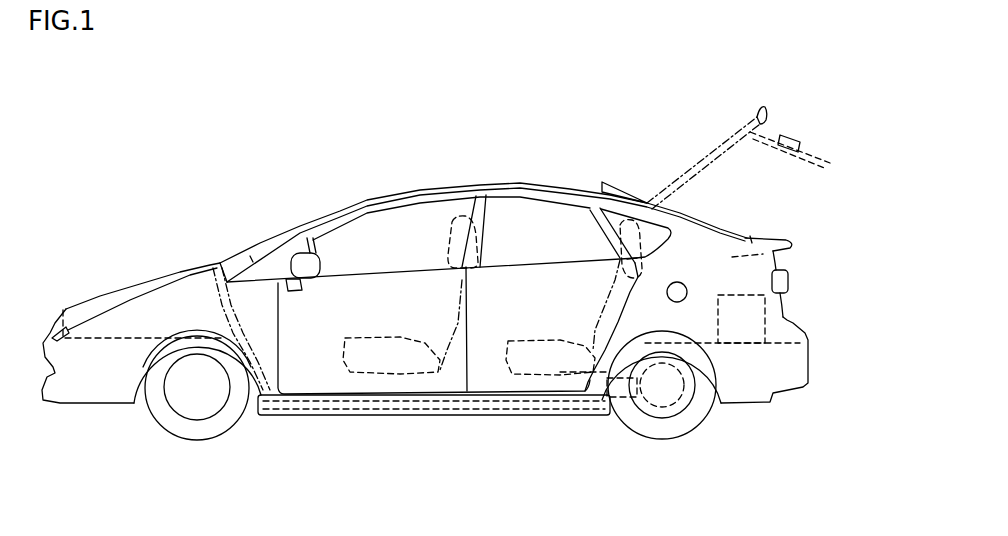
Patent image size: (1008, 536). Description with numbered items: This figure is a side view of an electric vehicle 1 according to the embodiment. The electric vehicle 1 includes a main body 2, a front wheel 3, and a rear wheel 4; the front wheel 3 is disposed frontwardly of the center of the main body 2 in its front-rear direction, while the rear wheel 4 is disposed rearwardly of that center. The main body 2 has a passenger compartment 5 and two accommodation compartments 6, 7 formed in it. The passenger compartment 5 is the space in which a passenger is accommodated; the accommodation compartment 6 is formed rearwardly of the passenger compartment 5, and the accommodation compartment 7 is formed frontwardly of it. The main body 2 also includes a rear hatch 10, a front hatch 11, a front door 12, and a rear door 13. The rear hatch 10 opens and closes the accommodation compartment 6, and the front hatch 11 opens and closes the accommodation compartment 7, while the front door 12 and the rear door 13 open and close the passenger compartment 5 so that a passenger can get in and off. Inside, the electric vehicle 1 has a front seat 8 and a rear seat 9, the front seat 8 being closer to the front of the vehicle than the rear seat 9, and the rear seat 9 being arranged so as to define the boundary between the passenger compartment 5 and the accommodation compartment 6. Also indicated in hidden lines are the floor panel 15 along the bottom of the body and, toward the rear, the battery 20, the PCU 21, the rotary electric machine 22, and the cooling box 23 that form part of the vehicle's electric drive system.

The electric vehicle 1 is at (614, 72).
The main body 2 is at (492, 186).
The front wheel 3 is at (196, 436).
The rear wheel 4 is at (714, 400).
The passenger compartment 5 is at (392, 228).
The accommodation compartment 6 is at (780, 253).
The accommodation compartment 7 is at (167, 298).
The front seat 8 is at (423, 347).
The rear seat 9 is at (577, 347).
The rear hatch 10 is at (760, 104).
The front hatch 11 is at (118, 288).
The front door 12 is at (325, 377).
The rear door 13 is at (508, 383).
The floor panel 15 is at (442, 402).
The battery 20 is at (375, 402).
The PCU (Power Control Unit) 21 is at (613, 400).
The rotary electric machine 22 is at (666, 407).
The cooling box 23 is at (765, 318).